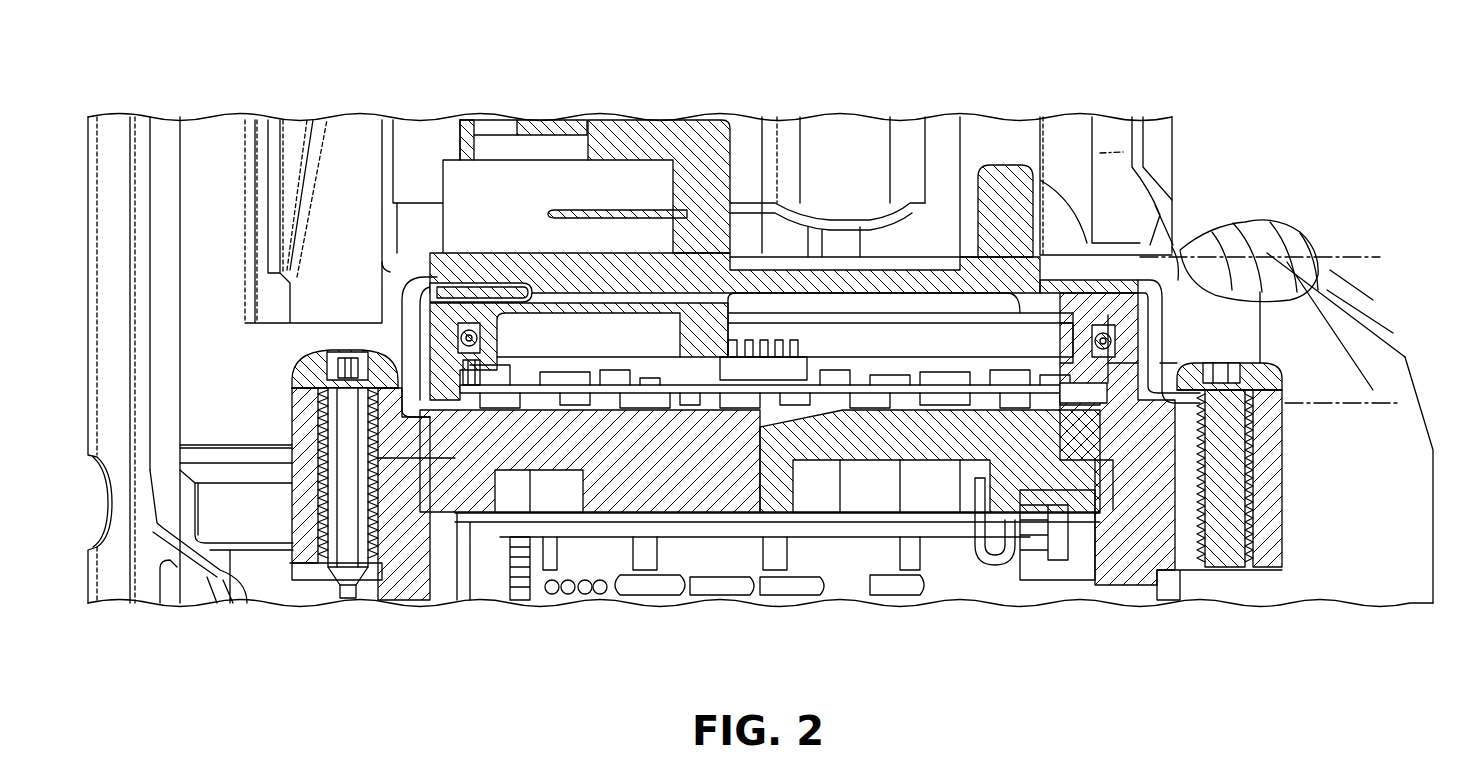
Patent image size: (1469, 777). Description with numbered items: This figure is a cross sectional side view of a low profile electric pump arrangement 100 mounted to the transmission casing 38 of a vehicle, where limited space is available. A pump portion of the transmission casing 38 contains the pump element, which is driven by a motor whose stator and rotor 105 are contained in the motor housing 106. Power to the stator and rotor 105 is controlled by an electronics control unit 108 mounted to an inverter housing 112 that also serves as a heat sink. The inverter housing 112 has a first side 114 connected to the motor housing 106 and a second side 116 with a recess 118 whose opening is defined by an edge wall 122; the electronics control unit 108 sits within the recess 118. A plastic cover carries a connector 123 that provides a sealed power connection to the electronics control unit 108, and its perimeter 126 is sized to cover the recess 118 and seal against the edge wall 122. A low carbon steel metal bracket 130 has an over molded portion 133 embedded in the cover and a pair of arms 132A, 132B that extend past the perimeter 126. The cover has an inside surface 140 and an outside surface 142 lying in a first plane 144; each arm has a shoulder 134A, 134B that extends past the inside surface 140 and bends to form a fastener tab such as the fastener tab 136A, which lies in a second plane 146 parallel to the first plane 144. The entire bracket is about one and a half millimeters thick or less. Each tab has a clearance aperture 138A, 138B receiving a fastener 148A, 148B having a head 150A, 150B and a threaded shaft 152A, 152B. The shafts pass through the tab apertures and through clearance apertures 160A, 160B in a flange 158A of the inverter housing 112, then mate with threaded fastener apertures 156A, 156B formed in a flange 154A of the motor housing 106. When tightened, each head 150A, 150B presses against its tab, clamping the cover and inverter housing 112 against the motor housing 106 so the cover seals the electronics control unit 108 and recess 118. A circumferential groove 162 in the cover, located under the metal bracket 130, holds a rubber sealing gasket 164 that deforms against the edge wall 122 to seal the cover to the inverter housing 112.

The transmission casing 38 is at (1407, 360).
The low profile electric pump arrangement 100 is at (1188, 108).
The stator and rotor 105 is at (583, 570).
The motor housing 106 is at (1168, 550).
The electronics control unit 108 is at (505, 384).
The inverter housing 112 is at (1086, 442).
The first side 114 is at (870, 464).
The second side 116 is at (883, 416).
The recess 118 is at (767, 308).
The edge wall 122 is at (458, 332).
The connector 123 is at (686, 177).
The perimeter 126 is at (1160, 282).
The metal bracket 130 is at (1057, 268).
The arm 132A is at (421, 241).
The arm 132B is at (1172, 300).
The over molded portion 133 is at (1080, 285).
The shoulder 134A is at (410, 286).
The shoulder 134B is at (1178, 268).
The fastener tab 136A is at (318, 352).
The aperture 138A is at (377, 358).
The aperture 138B is at (1272, 362).
The inside surface 140 is at (823, 298).
The outside surface 142 is at (745, 254).
The first plane 144 is at (1322, 222).
The second plane 146 is at (1325, 405).
The fastener 148A is at (343, 482).
The fastener 148B is at (1232, 452).
The head 150A is at (302, 386).
The head 150B is at (1260, 378).
The threaded shaft 152A is at (352, 537).
The threaded shaft 152B is at (1228, 517).
The flange 154A is at (297, 518).
The threaded fastener aperture 156A is at (320, 548).
The threaded fastener aperture 156B is at (1250, 547).
The flange 158A is at (290, 402).
The clearance aperture 160A is at (380, 443).
The clearance aperture 160B is at (1193, 437).
The circumferential groove 162 is at (466, 384).
The sealing gasket 164 is at (478, 372).